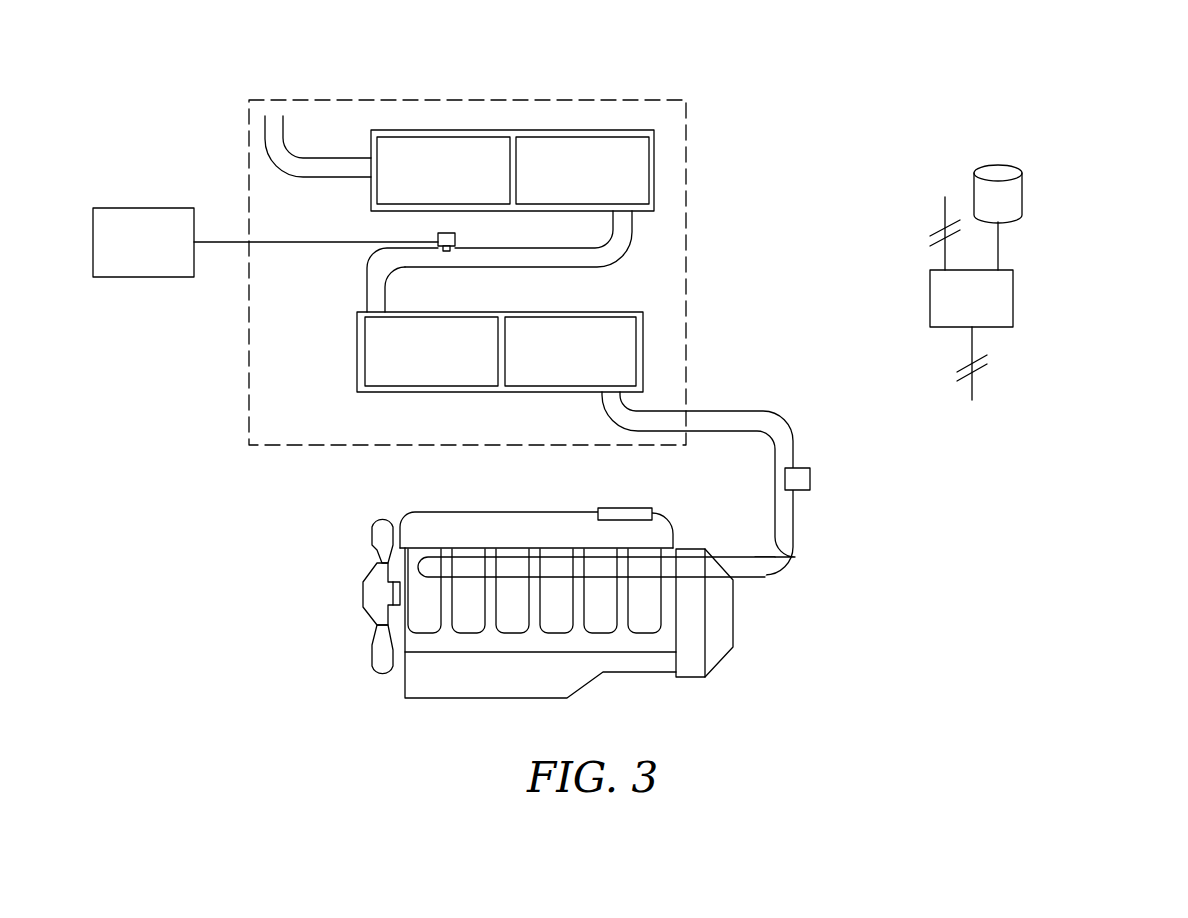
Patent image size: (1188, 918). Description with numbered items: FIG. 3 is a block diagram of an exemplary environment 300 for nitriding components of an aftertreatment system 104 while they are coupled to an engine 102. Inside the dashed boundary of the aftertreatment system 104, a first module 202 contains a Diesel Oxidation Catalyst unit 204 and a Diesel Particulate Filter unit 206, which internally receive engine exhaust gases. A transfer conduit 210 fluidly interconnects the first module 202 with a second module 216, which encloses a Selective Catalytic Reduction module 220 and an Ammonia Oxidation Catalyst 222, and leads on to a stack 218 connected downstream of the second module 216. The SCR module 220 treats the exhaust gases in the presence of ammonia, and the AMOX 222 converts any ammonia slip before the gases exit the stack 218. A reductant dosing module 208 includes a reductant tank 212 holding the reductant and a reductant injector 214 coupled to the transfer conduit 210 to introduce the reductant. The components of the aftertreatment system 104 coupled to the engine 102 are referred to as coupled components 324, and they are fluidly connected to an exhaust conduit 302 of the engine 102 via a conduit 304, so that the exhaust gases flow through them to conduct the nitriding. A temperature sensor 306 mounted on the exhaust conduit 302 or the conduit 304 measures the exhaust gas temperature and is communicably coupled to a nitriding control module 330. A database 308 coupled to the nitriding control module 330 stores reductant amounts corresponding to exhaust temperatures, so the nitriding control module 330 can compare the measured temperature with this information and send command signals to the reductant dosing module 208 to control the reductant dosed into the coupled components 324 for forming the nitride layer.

The engine 102 is at (690, 663).
The aftertreatment system 104 is at (684, 93).
The first module 202 is at (560, 352).
The Diesel Oxidation Catalyst (DOC) unit 204 is at (570, 351).
The Diesel Particulate Filter (DPF) unit 206 is at (431, 351).
The reductant dosing module 208 is at (505, 212).
The transfer conduit 210 is at (558, 258).
The reductant tank 212 is at (119, 203).
The reductant injector 214 is at (438, 238).
The second module 216 is at (512, 125).
The stack 218 is at (338, 167).
The Selective Catalytic Reduction (SCR) module 220 is at (582, 170).
The Ammonia Oxidation Catalyst (AMOX) 222 is at (443, 170).
The exemplary environment 300 is at (1027, 110).
The exhaust conduit 302 is at (772, 558).
The conduit 304 is at (648, 417).
The temperature sensor 306 is at (810, 479).
The database 308 is at (998, 217).
The coupled components 324 is at (686, 137).
The nitriding control module 330 is at (971, 298).